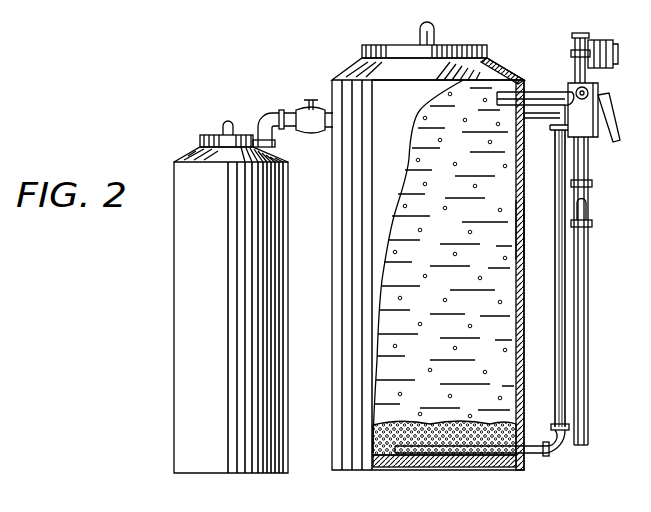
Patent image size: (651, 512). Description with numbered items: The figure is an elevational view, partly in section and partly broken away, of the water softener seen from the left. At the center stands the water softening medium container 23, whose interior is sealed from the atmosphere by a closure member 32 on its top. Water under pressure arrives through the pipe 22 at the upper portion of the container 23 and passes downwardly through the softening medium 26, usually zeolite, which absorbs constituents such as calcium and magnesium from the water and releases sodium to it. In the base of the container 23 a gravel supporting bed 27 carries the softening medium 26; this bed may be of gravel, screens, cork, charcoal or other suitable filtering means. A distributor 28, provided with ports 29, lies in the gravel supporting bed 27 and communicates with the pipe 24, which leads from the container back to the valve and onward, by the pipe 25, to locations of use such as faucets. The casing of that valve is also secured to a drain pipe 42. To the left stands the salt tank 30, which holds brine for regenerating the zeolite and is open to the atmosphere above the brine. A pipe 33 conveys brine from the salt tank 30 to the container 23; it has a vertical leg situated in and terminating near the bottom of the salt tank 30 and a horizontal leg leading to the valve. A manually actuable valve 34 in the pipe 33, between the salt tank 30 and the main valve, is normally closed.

The pipe 22 is at (525, 97).
The water softening medium container 23 is at (332, 311).
The pipe 24 is at (559, 369).
The pipe 25 is at (602, 90).
The softening medium 26 is at (519, 227).
The gravel supporting bed 27 is at (391, 462).
The distributor 28 is at (461, 460).
The ports 29 is at (441, 462).
The salt tank 30 is at (176, 341).
The closure member 32 is at (403, 45).
The pipe 33 is at (270, 111).
The manually actuable valve 34 is at (311, 99).
The drain pipe 42 is at (589, 279).